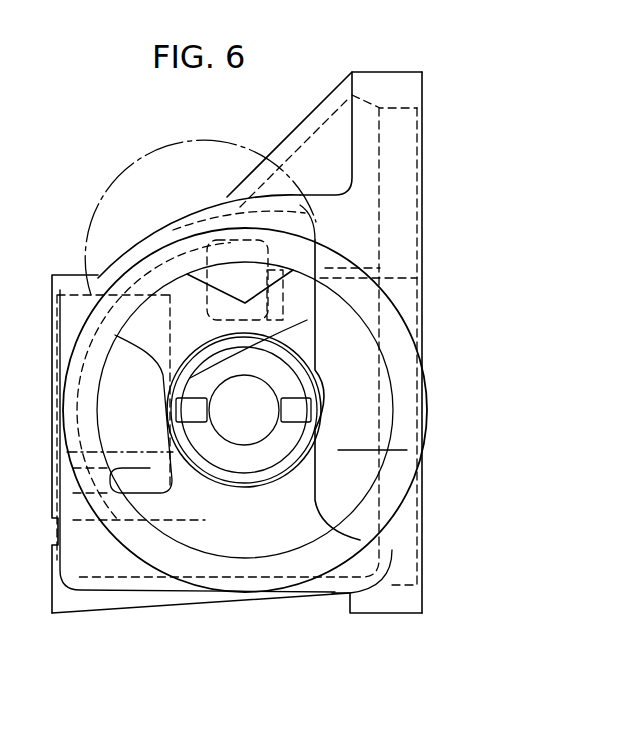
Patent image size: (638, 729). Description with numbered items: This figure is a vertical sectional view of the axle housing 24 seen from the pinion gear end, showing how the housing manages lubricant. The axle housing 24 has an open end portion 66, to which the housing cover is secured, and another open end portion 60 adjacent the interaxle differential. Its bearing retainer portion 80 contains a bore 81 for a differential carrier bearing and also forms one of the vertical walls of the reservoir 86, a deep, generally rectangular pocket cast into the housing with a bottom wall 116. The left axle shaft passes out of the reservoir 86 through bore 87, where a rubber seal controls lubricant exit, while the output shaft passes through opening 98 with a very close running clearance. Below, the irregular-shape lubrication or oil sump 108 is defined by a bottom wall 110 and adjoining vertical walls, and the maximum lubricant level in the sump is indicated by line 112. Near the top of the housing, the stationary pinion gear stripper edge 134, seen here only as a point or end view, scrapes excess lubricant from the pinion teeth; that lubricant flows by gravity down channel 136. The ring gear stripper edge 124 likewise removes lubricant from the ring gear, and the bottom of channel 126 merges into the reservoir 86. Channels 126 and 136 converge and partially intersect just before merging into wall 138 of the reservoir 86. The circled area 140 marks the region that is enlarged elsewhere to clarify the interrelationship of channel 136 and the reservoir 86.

The axle housing 24 is at (366, 70).
The open end portion 66 is at (424, 90).
The channel 136 is at (175, 222).
The circled area 140 is at (220, 145).
The reservoir 86 is at (313, 196).
The pinion gear stripper edge 134 is at (137, 265).
The lubrication or oil sump 108 is at (250, 534).
The bearing retainer portion 80 is at (328, 220).
The bore 81 is at (323, 276).
The ring gear stripper edge 124 is at (424, 270).
The channel 126 is at (315, 320).
The bore 87 is at (178, 328).
The wall of reservoir 138 is at (244, 410).
The opening 98 is at (229, 392).
The bottom wall 116 is at (255, 474).
The line 112 is at (355, 455).
The open end portion 60 is at (163, 550).
The bottom wall 110 is at (240, 573).